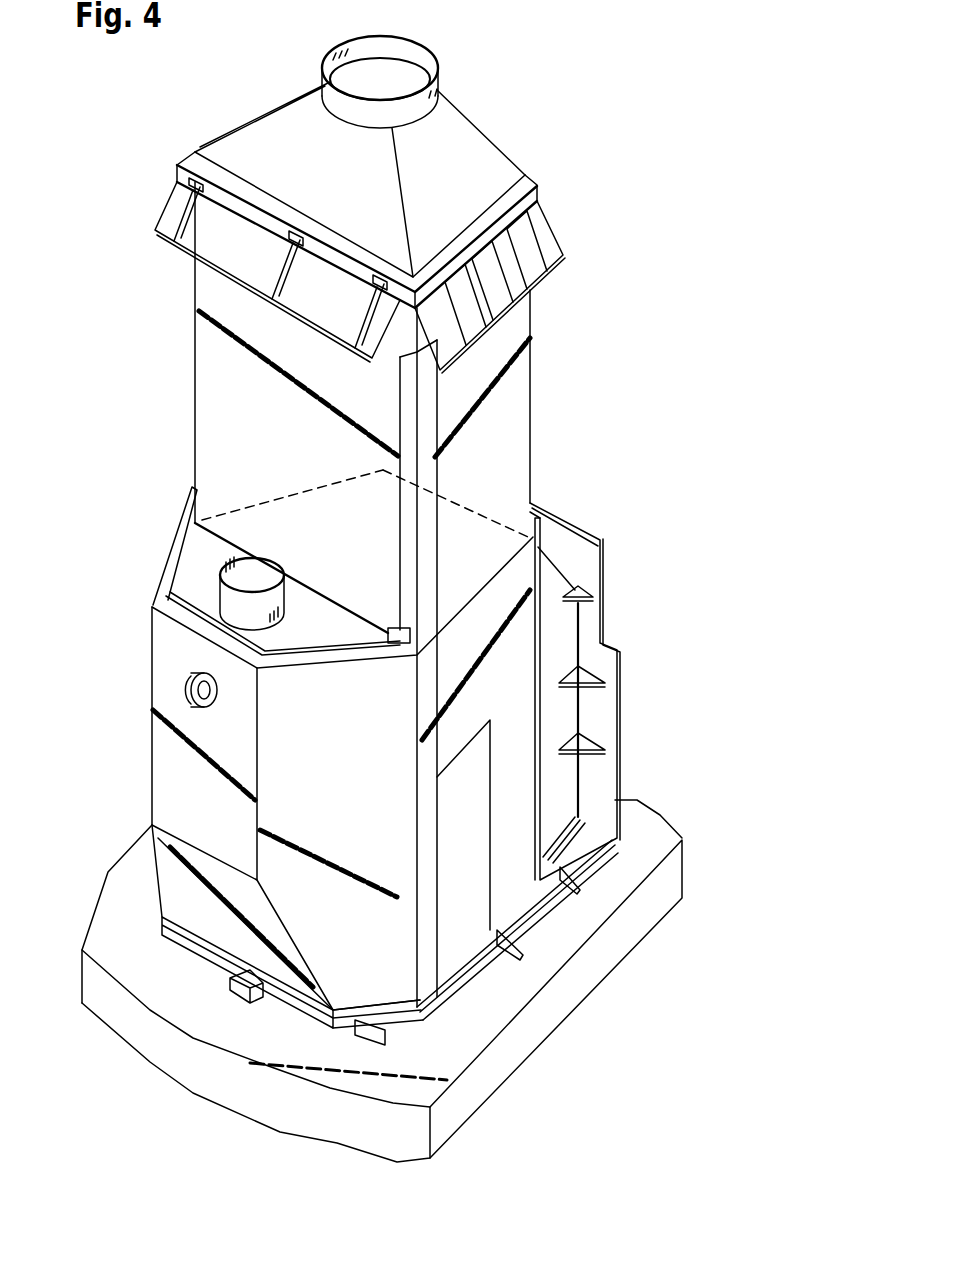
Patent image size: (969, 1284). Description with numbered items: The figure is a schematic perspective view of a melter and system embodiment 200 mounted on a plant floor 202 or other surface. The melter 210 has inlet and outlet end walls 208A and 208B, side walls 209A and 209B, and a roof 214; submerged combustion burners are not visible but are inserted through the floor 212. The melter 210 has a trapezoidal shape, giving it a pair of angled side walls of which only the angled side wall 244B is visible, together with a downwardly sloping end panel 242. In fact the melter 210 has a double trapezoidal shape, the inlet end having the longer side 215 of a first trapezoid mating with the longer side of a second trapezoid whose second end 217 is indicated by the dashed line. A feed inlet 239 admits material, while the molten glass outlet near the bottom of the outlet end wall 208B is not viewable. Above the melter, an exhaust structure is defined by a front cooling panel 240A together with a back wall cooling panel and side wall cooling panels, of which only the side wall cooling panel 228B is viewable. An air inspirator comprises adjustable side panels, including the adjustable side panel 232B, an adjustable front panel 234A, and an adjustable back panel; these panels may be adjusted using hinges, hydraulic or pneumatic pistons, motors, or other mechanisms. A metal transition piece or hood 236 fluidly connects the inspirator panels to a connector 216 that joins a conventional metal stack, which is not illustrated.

The melter and system embodiment 200 is at (572, 48).
The plant floor 202 is at (636, 835).
The inlet end wall 208A is at (168, 776).
The outlet end wall 208B is at (591, 533).
The side wall 209A is at (225, 396).
The side wall 209B is at (502, 660).
The melter 210 is at (353, 794).
The floor 212 is at (470, 968).
The roof 214 is at (200, 570).
The longer side of first trapezoid 215 is at (232, 533).
The connector 216 is at (404, 36).
The second end of second trapezoid 217 is at (490, 512).
The side wall cooling panel 228B is at (520, 418).
The adjustable side panel 232B is at (528, 236).
The adjustable front panel 234A is at (213, 233).
The hood 236 is at (452, 138).
The feed inlet 239 is at (183, 695).
The front cooling panel 240A is at (305, 463).
The downwardly sloping end panel 242 is at (172, 885).
The angled side wall 244B is at (375, 950).